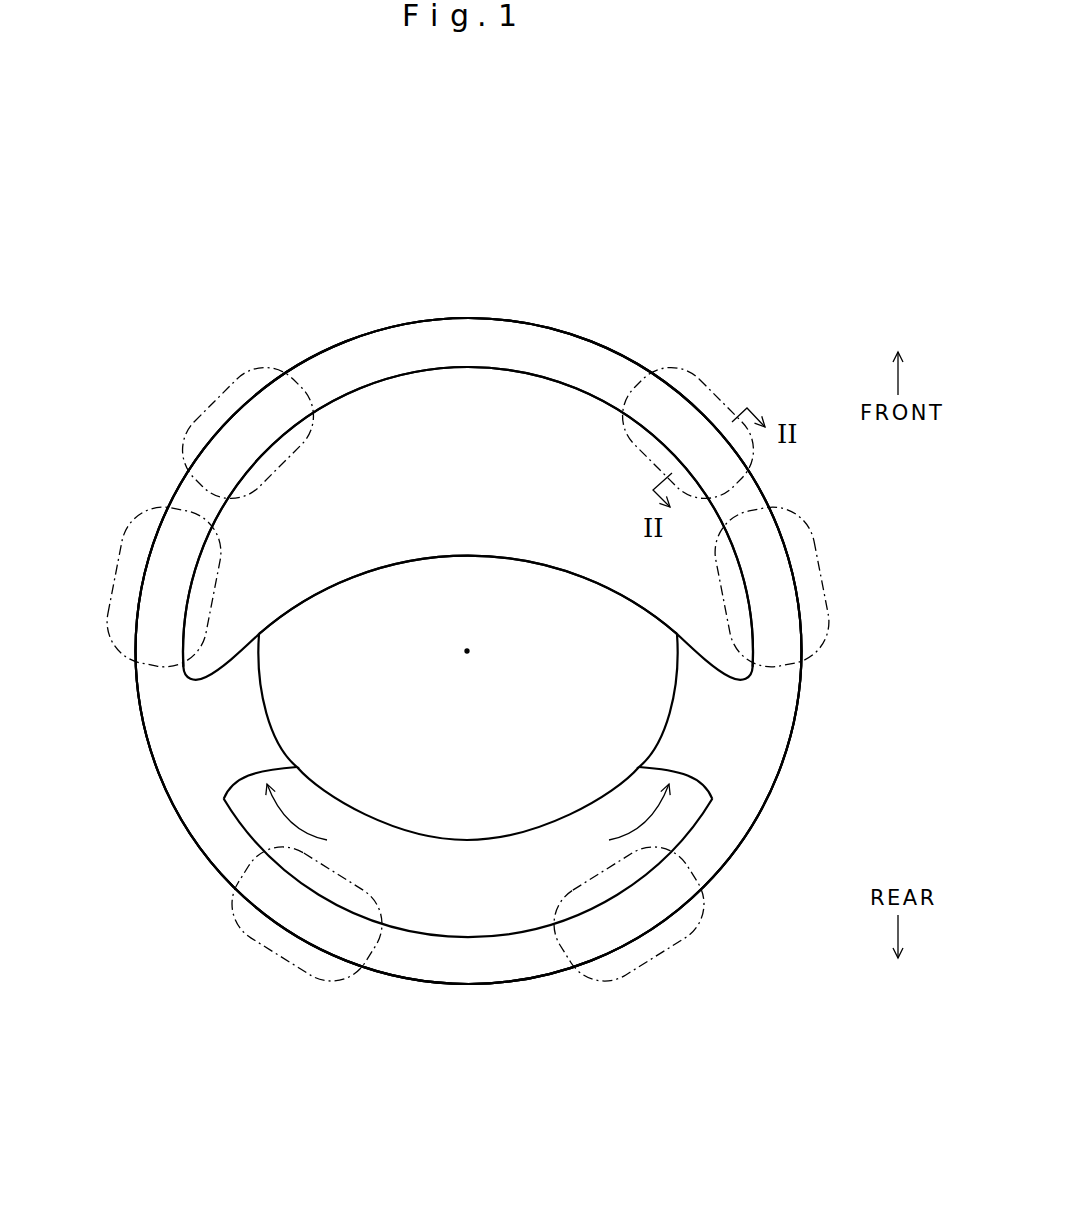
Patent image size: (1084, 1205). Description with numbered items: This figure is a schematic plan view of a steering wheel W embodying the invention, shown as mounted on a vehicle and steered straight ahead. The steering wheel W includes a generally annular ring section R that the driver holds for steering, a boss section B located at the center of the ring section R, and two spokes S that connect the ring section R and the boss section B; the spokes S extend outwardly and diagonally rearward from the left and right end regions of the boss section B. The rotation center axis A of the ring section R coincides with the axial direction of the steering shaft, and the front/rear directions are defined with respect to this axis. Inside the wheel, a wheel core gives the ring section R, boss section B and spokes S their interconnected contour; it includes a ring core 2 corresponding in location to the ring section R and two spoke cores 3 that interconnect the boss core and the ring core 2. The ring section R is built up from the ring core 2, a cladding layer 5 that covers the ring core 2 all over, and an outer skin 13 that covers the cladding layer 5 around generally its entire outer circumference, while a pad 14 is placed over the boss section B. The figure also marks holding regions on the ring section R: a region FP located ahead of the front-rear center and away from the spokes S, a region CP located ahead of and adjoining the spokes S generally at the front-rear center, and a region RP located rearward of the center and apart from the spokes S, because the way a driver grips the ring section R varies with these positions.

The steering wheel W is at (645, 280).
The ring core 2 is at (632, 378).
The spoke core 3 is at (230, 697).
The cladding layer 5 is at (517, 333).
The outer skin 13 is at (565, 352).
The pad 14 is at (395, 555).
The ring section R is at (302, 355).
The boss section B is at (487, 553).
The rotation center axis A is at (469, 660).
The spoke S is at (468, 823).
The front holding region FP is at (215, 400).
The center holding region CP is at (107, 617).
The rear holding region RP is at (282, 960).